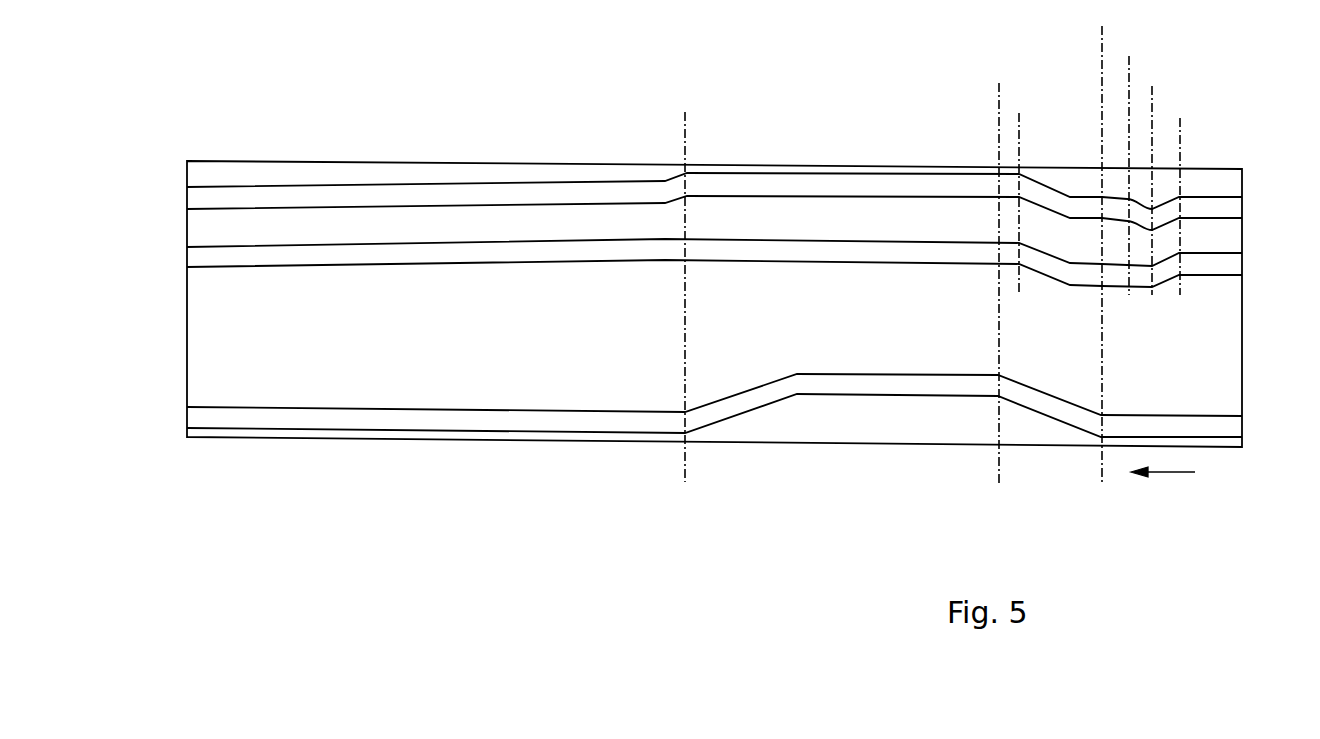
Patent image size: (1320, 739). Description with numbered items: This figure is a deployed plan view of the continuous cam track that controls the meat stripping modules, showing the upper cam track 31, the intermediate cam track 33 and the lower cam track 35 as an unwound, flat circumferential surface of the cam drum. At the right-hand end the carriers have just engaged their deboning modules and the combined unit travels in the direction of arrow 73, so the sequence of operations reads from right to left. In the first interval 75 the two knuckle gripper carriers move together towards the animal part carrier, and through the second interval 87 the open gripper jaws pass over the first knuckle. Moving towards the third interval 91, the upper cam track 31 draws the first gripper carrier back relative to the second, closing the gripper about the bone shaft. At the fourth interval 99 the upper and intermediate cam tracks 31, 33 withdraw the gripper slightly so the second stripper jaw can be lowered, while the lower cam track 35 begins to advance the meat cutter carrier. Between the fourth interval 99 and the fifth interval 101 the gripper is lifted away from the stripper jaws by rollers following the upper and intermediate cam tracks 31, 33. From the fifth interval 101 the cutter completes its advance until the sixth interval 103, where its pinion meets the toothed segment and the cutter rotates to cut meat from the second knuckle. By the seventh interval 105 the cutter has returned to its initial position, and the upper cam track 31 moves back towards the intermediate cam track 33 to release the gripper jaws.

The upper cam track 31 is at (212, 197).
The intermediate cam track 33 is at (212, 254).
The lower cam track 35 is at (212, 416).
The arrow 73 is at (1162, 472).
The first interval 75 is at (1180, 118).
The second interval 87 is at (1152, 86).
The third interval 91 is at (1129, 56).
The fourth interval 99 is at (1102, 26).
The fifth interval 101 is at (1019, 113).
The sixth interval 103 is at (999, 84).
The seventh interval 105 is at (685, 113).